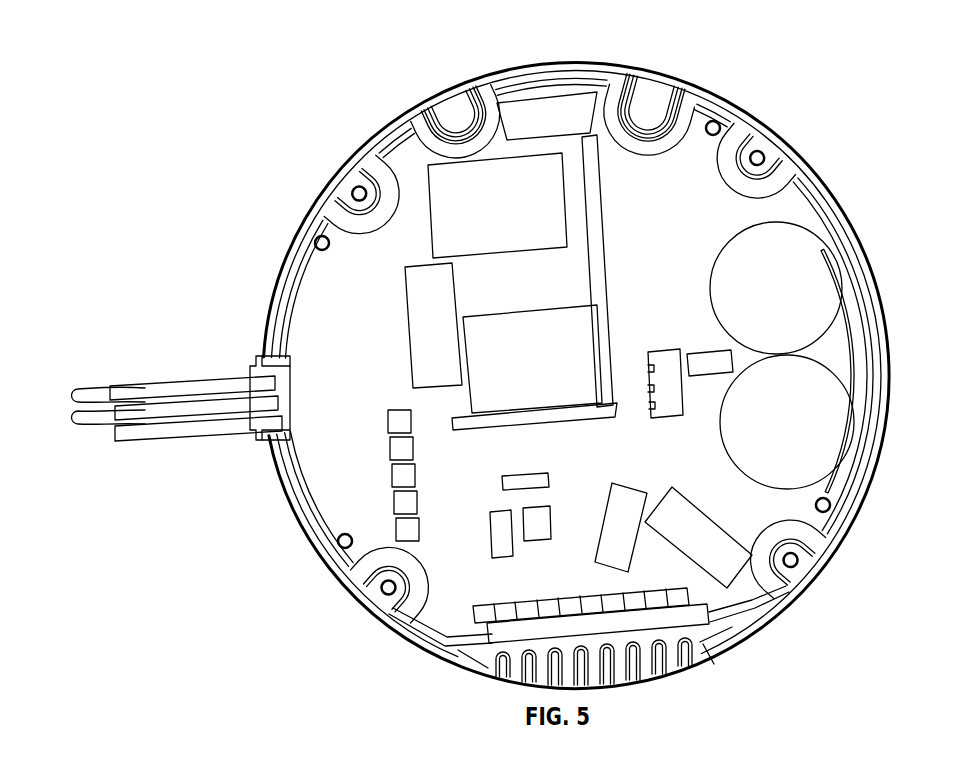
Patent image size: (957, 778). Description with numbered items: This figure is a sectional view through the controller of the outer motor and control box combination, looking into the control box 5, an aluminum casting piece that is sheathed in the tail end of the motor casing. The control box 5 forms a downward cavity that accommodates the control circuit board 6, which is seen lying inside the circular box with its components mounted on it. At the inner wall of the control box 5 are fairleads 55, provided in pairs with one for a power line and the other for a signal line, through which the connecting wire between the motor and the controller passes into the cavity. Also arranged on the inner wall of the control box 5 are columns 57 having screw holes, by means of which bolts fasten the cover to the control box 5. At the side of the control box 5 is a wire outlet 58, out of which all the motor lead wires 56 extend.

The control box 5 is at (272, 280).
The control circuit board 6 is at (360, 462).
The fairlead 55 is at (455, 117).
The motor lead wires 56 is at (230, 410).
The column 57 is at (341, 183).
The wire outlet 58 is at (267, 378).